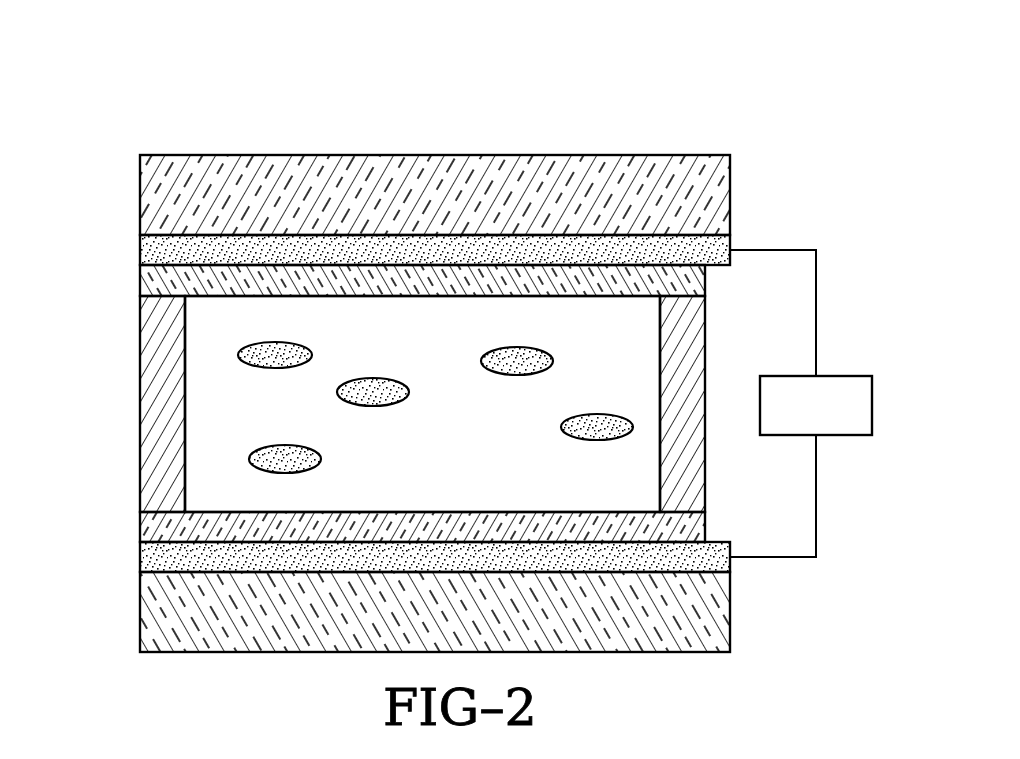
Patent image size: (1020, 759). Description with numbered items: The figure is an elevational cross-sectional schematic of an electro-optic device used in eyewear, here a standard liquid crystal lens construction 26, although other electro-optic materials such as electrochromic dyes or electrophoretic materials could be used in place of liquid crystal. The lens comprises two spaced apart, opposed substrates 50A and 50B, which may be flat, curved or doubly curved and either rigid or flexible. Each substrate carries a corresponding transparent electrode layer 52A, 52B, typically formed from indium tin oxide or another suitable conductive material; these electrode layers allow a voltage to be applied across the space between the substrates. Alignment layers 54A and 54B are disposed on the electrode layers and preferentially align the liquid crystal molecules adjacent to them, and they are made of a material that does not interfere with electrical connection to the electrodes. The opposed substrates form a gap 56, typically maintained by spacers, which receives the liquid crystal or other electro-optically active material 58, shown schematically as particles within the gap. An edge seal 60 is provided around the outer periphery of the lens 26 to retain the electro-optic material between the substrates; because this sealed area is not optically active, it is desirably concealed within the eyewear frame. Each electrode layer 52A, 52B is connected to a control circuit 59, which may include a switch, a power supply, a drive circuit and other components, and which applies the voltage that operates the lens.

The liquid crystal lens construction 26 is at (450, 343).
The substrate 50A is at (140, 200).
The transparent electrode layer 52A is at (140, 255).
The alignment layer 54A is at (140, 290).
The edge seal 60 is at (140, 345).
The gap 56 is at (367, 309).
The electro-optically active material 58 is at (282, 348).
The alignment layer 54B is at (705, 525).
The transparent electrode layer 52B is at (140, 560).
The substrate 50B is at (730, 640).
The control circuit 59 is at (805, 376).